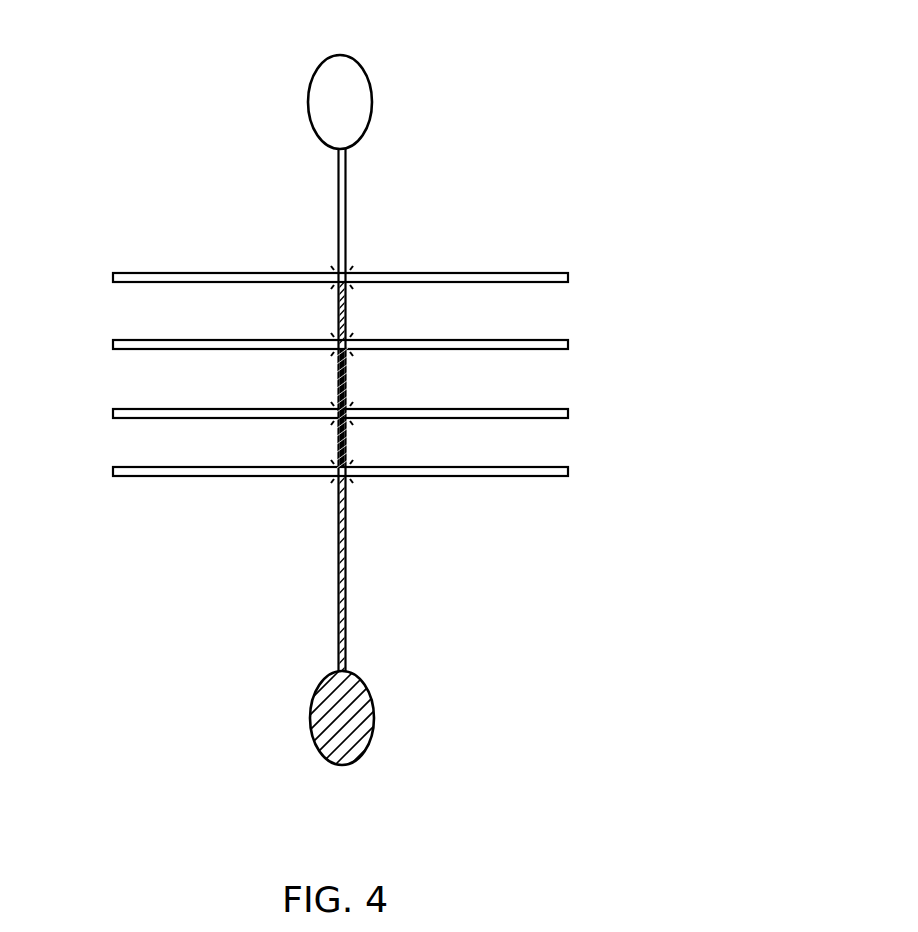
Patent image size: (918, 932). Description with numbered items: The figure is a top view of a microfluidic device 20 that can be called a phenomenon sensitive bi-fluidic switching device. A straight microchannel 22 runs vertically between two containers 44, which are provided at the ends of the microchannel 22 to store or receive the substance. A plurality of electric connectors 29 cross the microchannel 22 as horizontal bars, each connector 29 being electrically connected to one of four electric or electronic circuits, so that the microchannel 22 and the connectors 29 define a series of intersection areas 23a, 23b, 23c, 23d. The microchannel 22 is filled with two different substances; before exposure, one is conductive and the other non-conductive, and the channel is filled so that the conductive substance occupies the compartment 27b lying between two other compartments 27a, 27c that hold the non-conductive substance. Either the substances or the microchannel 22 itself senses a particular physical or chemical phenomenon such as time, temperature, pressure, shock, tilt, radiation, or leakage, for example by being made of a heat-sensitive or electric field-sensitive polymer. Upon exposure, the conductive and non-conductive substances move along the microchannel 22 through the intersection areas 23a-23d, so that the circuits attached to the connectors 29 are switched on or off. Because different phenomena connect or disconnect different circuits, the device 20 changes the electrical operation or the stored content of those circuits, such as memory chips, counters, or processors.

The microfluidic device 20 is at (713, 227).
The microchannel 22 is at (331, 217).
The intersection area 23a is at (334, 270).
The intersection area 23b is at (334, 337).
The intersection area 23c is at (334, 406).
The intersection area 23d is at (334, 464).
The compartment 27a is at (350, 312).
The compartment 27b is at (350, 383).
The compartment 27c is at (350, 513).
The electric connectors 29 is at (184, 273).
The containers 44 is at (372, 92).